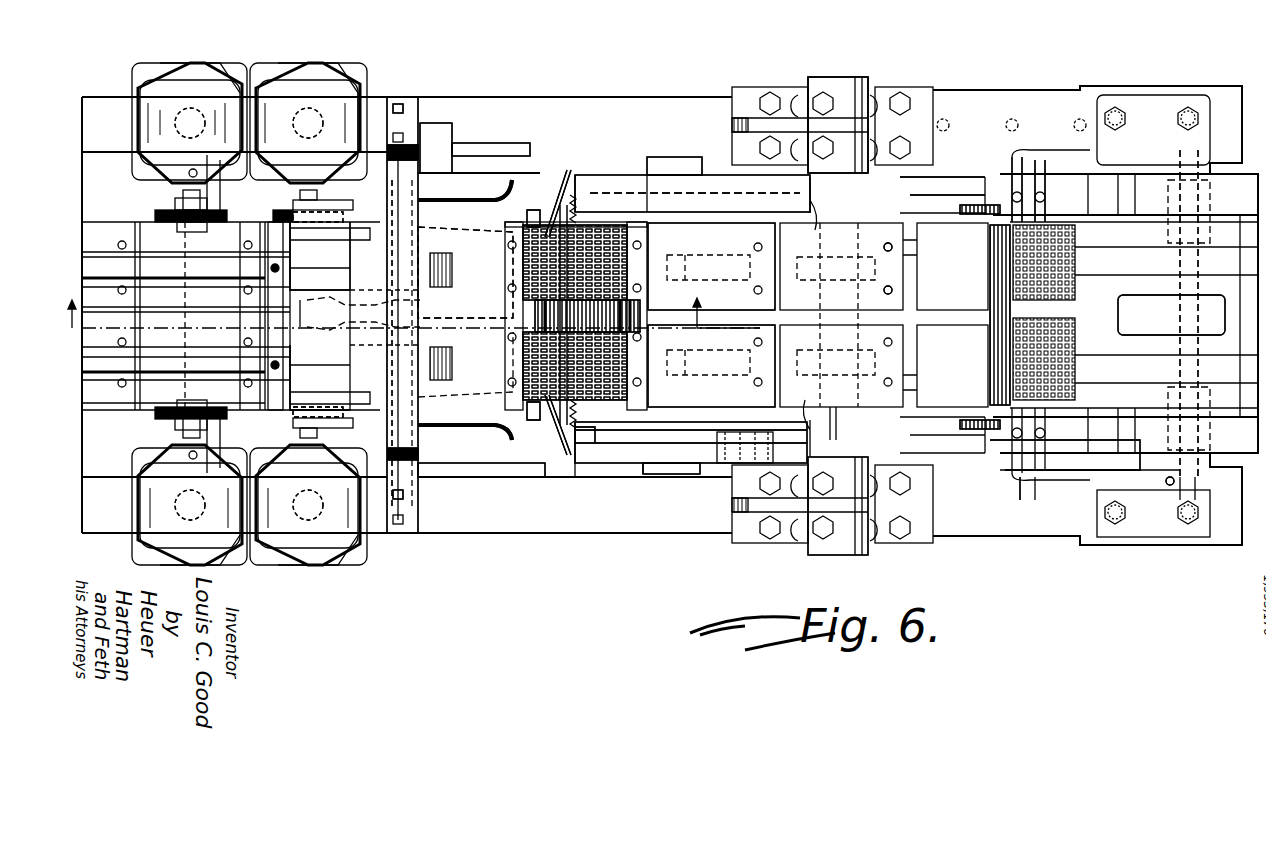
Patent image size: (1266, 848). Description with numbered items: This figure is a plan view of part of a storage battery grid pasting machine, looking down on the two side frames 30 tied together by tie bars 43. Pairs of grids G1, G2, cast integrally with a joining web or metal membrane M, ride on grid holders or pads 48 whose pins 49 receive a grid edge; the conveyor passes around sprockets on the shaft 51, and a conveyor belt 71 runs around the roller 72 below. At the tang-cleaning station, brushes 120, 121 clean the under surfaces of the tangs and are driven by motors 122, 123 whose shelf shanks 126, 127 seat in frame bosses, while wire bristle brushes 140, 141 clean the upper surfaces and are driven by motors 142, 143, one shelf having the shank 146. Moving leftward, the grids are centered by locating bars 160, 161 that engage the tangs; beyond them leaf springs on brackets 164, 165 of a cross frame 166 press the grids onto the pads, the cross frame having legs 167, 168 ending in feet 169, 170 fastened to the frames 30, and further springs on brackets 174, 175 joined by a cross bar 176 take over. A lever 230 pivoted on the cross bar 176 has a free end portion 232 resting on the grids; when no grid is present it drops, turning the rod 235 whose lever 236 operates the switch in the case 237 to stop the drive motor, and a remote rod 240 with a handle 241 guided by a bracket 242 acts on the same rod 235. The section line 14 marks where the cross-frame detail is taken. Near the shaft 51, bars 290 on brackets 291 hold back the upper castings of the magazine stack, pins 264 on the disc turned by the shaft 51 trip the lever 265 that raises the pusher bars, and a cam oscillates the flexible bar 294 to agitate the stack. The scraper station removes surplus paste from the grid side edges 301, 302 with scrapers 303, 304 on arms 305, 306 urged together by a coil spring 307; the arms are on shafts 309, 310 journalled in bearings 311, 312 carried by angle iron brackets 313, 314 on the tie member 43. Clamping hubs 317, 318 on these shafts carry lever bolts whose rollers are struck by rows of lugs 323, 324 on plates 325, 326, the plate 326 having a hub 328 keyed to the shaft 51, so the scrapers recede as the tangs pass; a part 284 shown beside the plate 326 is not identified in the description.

The motor 143 is at (165, 78).
The shank 146 is at (178, 115).
The shank 127 is at (305, 108).
The motor 123 is at (328, 82).
The rod 235 is at (393, 104).
The lever 236 is at (418, 125).
The foot 170 is at (418, 118).
The switch case 237 is at (440, 138).
The frame 30 is at (598, 97).
The arm 306 is at (585, 185).
The pair of bearings 312 is at (590, 190).
The angle iron bracket 314 is at (625, 190).
The tie bar 43 is at (680, 162).
The shaft 51 is at (838, 77).
The bar 290 is at (1015, 165).
The bracket 291 is at (1042, 165).
The wire bristle brush 141 is at (155, 215).
The wire bristle brush 140 is at (155, 415).
The brush 121 is at (293, 215).
The leg 168 is at (418, 170).
The locating bar 161 is at (510, 190).
The scraper 304 is at (555, 185).
The roller 72 is at (533, 210).
The grid G2 is at (600, 222).
The grid G1 is at (630, 395).
The shaft 310 is at (660, 205).
The grid holder or pad 48 is at (730, 230).
The clamping hub 318 is at (838, 173).
The hub 328 is at (875, 177).
The hatched plate 284 is at (940, 210).
The plate 326 is at (935, 200).
The cross bar 176 is at (295, 290).
The bracket 175 is at (350, 245).
The bracket 174 is at (330, 380).
The bracket 165 is at (452, 268).
The bracket 164 is at (452, 360).
The lever 230 is at (500, 315).
The side edge 302 is at (612, 225).
The lugs 324 is at (815, 215).
The pins 49 is at (884, 290).
The web or metal membrane M is at (1075, 313).
The section line 14 is at (411, 305).
The free end portion 232 is at (600, 320).
The coil spring 307 is at (655, 362).
The plate 325 is at (1000, 350).
The bar of flexible metal 294 is at (1210, 320).
The cross frame 166 is at (405, 417).
The leg 167 is at (418, 452).
The locating bar 160 is at (500, 440).
The conveyor belt 71 is at (533, 420).
The side edge 301 is at (592, 408).
The lugs 323 is at (808, 425).
The clamping hub 317 is at (833, 407).
The pair of bearings 311 is at (590, 445).
The shaft 309 is at (685, 440).
The pins 264 is at (718, 465).
The lever 265 is at (930, 475).
The rod 240 is at (510, 480).
The bracket 242 is at (1030, 500).
The handle 241 is at (1168, 487).
The foot 169 is at (405, 510).
The scraper 303 is at (565, 458).
The arm 305 is at (578, 465).
The angle iron bracket 313 is at (632, 478).
The brush 120 is at (290, 420).
The motor 142 is at (215, 550).
The motor 122 is at (300, 550).
The shank 126 is at (315, 520).